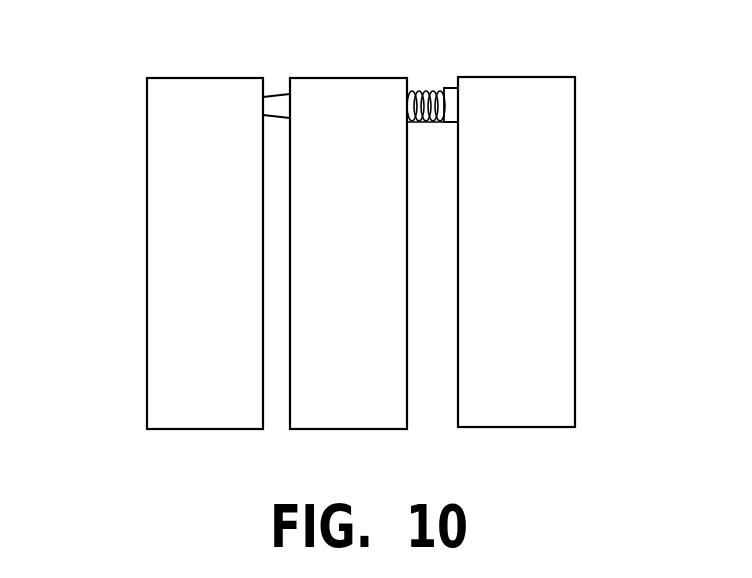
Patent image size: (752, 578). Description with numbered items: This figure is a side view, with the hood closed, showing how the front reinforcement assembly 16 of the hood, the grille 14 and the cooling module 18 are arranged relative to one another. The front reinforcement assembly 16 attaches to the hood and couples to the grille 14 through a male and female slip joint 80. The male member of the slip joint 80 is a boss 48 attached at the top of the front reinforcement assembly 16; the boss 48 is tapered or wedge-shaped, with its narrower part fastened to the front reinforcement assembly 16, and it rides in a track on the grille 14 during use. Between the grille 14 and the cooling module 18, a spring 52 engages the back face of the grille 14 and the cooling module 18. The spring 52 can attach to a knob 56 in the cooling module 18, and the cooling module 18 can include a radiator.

The grille 14 is at (315, 388).
The front reinforcement assembly 16 is at (175, 228).
The cooling module 18 is at (552, 279).
The boss 48 is at (277, 104).
The male and female slip joint 80 is at (292, 105).
The spring 52 is at (415, 97).
The knob 56 is at (453, 123).